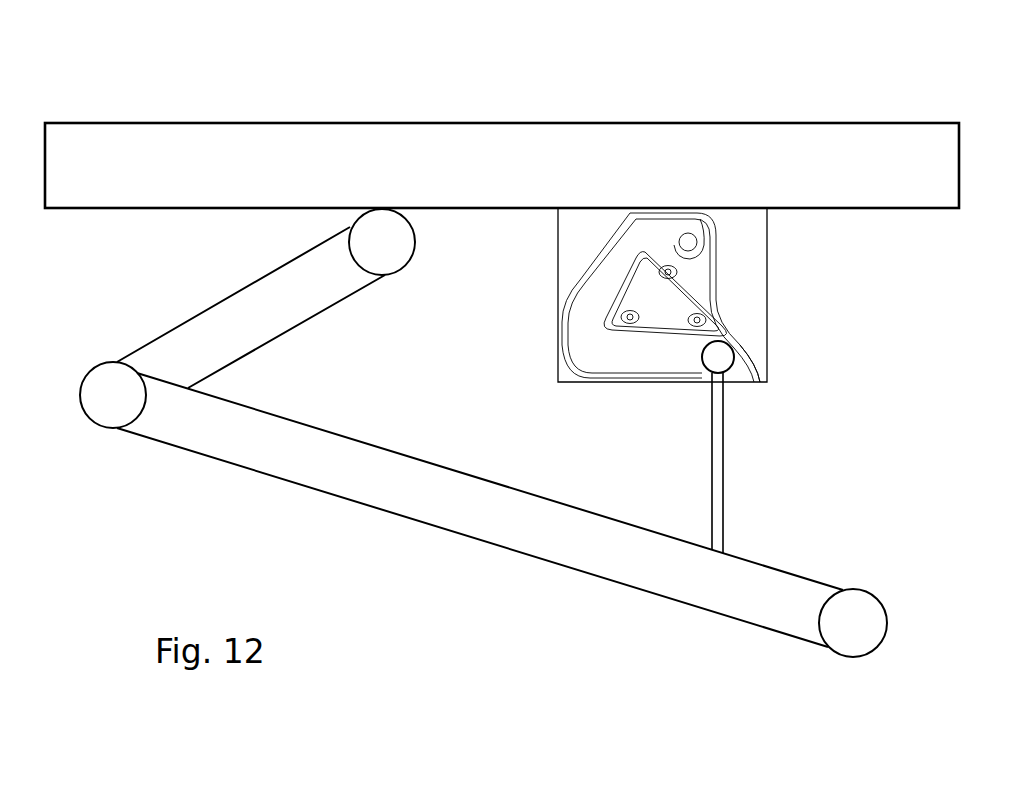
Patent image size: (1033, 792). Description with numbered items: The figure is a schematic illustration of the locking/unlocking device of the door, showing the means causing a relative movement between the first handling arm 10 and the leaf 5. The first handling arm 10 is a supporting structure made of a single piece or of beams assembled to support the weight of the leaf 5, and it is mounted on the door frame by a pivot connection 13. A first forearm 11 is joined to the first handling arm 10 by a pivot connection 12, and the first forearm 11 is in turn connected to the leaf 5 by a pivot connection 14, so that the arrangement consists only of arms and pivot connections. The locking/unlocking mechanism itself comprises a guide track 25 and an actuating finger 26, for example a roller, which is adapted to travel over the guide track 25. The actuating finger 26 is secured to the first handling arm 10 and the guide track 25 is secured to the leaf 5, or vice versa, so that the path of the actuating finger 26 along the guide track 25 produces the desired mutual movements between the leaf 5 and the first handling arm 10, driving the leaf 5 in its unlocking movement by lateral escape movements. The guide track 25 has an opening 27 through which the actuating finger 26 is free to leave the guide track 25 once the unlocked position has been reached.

The leaf 5 is at (533, 135).
The first handling arm 10 is at (453, 485).
The first forearm 11 is at (293, 312).
The pivot connection 12 is at (110, 417).
The pivot connection 13 is at (863, 607).
The pivot connection 14 is at (392, 257).
The guide track 25 is at (707, 280).
The actuating finger 26 is at (727, 362).
The opening 27 is at (745, 377).